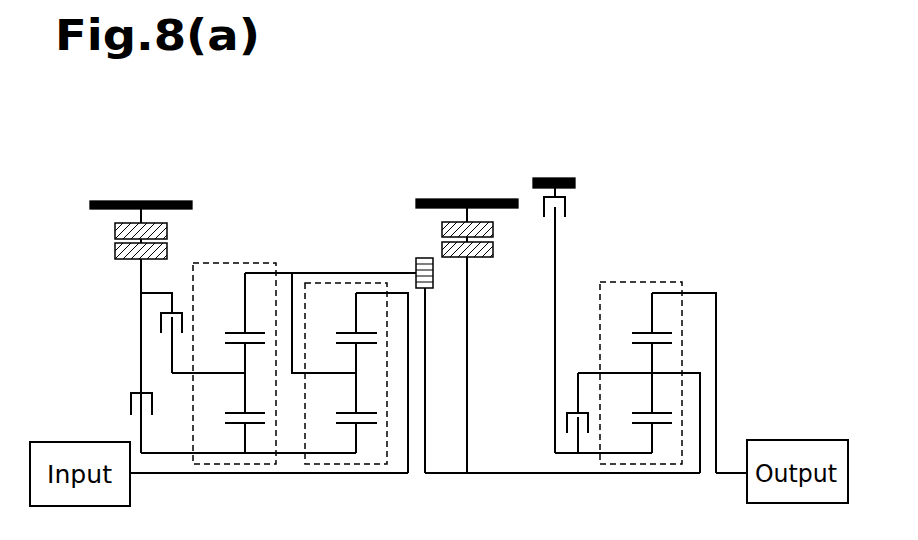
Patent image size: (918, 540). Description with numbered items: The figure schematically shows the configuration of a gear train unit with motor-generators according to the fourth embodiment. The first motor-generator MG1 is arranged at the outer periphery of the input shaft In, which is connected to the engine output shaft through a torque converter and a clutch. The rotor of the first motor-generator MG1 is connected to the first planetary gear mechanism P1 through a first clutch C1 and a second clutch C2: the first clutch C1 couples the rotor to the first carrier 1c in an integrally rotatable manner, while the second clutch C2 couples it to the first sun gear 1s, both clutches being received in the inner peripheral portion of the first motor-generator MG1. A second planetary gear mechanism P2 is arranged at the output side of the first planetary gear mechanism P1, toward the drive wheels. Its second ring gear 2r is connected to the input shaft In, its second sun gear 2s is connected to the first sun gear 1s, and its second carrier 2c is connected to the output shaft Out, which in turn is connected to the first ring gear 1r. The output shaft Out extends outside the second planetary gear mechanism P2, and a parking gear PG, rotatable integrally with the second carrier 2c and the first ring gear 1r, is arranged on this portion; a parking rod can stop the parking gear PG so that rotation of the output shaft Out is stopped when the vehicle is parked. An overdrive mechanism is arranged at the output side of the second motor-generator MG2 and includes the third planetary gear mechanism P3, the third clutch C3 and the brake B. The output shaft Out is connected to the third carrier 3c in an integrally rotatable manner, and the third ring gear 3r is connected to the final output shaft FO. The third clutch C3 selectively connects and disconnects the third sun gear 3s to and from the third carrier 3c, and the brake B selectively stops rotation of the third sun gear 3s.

The first motor-generator MG1 is at (128, 327).
The second motor-generator MG2 is at (478, 336).
The first planetary gear mechanism P1 is at (230, 262).
The second planetary gear mechanism P2 is at (320, 282).
The third planetary gear mechanism P3 is at (636, 281).
The parking gear PG is at (420, 257).
The brake B is at (566, 208).
The first clutch C1 is at (161, 325).
The second clutch C2 is at (131, 400).
The third clutch C3 is at (567, 422).
The first ring gear 1r is at (243, 317).
The first carrier 1c is at (243, 396).
The first sun gear 1s is at (243, 446).
The second ring gear 2r is at (354, 317).
The second carrier 2c is at (354, 396).
The second sun gear 2s is at (354, 446).
The third ring gear 3r is at (650, 317).
The third carrier 3c is at (650, 396).
The third sun gear 3s is at (650, 446).
The input shaft In is at (155, 473).
The output shaft Out is at (517, 473).
The final output shaft FO is at (730, 473).